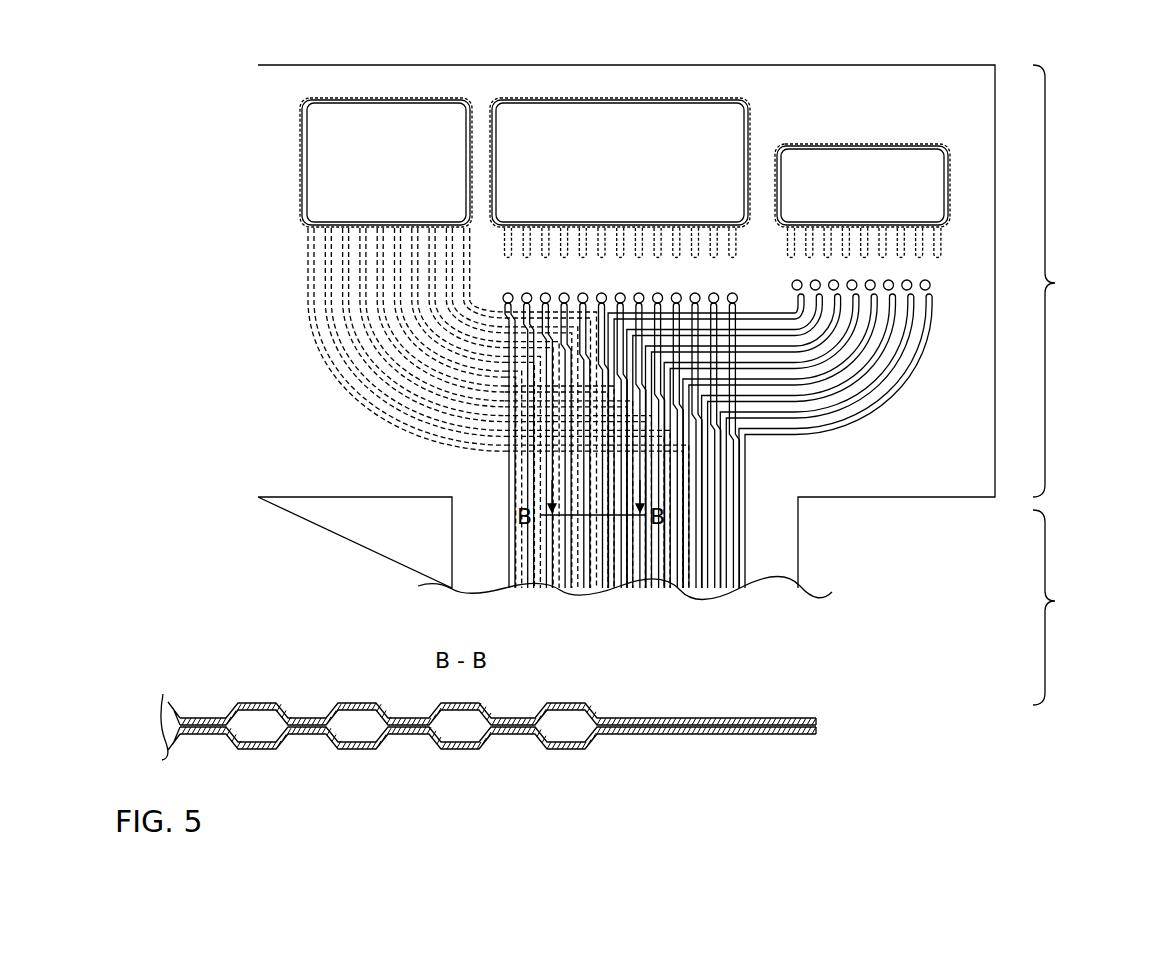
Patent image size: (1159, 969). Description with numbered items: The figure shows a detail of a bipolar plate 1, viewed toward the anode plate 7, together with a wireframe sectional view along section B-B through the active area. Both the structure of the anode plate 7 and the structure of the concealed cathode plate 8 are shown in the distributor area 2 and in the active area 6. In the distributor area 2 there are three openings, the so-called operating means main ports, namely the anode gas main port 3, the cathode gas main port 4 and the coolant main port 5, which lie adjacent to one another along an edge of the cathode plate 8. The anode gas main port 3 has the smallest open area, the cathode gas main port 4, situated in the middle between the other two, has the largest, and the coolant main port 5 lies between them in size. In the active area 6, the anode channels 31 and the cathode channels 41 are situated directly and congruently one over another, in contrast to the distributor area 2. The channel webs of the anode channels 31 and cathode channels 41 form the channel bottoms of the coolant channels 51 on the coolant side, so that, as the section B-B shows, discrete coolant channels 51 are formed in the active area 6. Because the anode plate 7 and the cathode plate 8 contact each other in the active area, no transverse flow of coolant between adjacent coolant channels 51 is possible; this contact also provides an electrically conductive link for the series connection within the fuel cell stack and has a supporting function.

The bipolar plate 1 is at (1085, 77).
The distributor area 2 is at (1054, 281).
The anode gas main port 3 is at (862, 158).
The cathode gas main port 4 is at (620, 122).
The coolant main port 5 is at (392, 122).
The active area 6 is at (1054, 607).
The anode plate 7 is at (693, 721).
The cathode plate 8 is at (668, 731).
The anode channels 31 is at (820, 432).
The cathode channels 41 is at (753, 469).
The coolant channels 51 is at (437, 402).